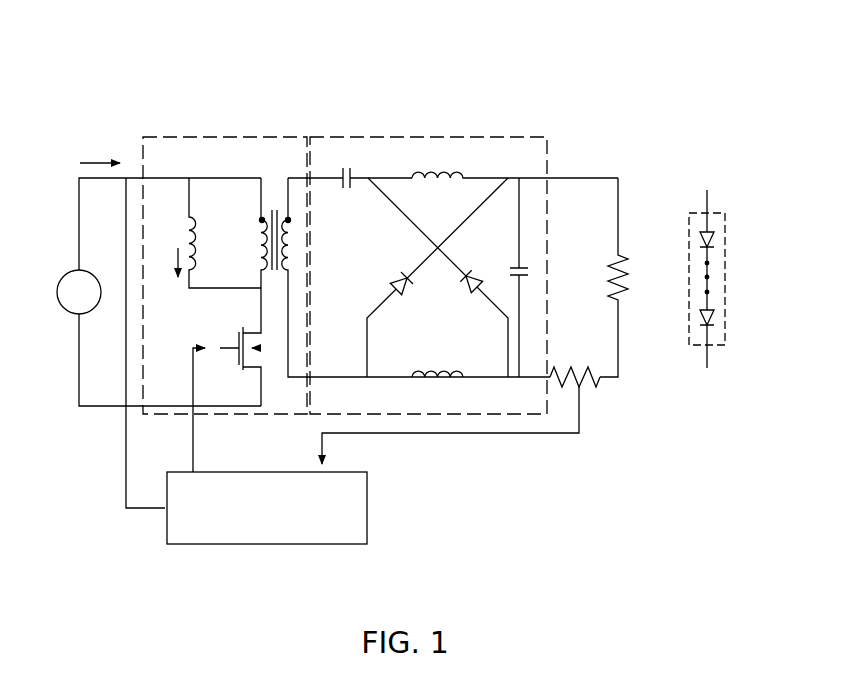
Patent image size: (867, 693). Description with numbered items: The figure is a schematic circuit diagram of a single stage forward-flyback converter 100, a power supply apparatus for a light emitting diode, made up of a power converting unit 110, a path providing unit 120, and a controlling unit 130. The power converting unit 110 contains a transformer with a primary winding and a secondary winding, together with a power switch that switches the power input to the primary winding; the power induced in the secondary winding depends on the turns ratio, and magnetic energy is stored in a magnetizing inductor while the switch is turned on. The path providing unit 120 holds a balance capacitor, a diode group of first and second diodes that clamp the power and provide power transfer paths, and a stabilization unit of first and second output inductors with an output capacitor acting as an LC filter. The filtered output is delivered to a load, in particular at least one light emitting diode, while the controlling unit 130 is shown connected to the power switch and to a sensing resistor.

The single stage forward-flyback converter 100 is at (321, 31).
The power converting unit 110 is at (206, 137).
The path providing unit 120 is at (482, 137).
The controlling unit 130 is at (367, 508).